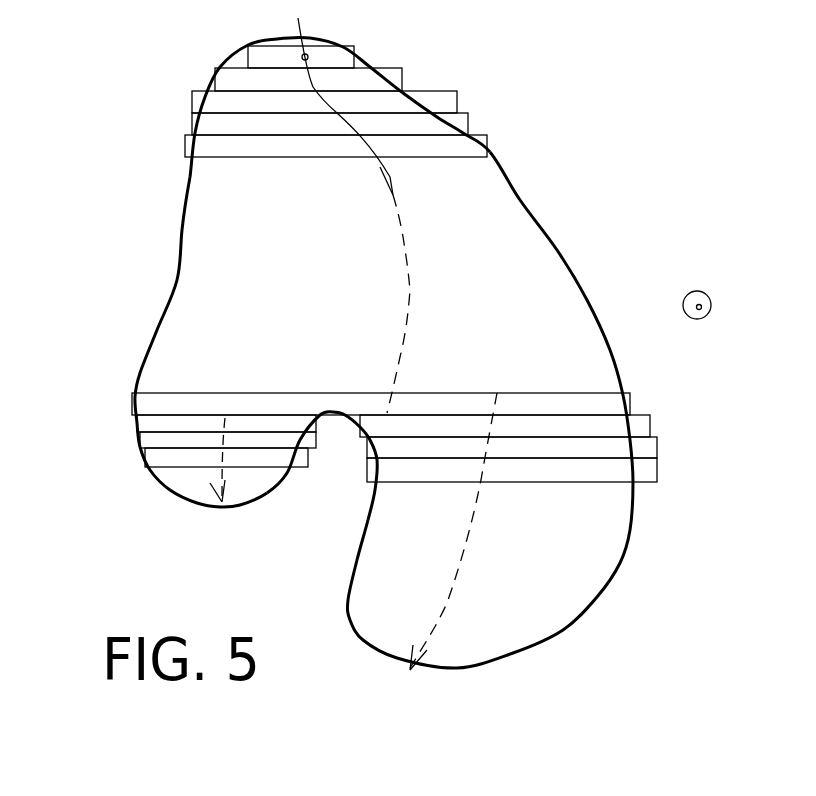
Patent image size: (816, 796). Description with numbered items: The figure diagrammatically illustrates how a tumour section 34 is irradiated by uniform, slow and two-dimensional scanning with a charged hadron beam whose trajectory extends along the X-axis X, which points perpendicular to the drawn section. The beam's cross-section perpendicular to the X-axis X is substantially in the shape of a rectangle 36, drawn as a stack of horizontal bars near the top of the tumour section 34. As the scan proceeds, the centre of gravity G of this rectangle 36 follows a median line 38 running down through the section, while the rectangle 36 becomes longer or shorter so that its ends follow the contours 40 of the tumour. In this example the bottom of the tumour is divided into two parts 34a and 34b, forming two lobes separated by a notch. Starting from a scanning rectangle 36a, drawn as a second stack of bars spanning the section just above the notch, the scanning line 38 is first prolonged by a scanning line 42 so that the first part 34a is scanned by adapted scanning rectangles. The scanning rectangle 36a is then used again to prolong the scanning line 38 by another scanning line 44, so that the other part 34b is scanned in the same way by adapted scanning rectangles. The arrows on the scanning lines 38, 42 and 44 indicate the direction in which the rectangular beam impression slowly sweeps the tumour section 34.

The tumour section 34 is at (180, 272).
The first part of the bottom of the tumour 34a is at (197, 513).
The second part of the bottom of the tumour 34b is at (548, 663).
The rectangle 36 is at (412, 107).
The scanning rectangle 36a is at (147, 403).
The median line 38 is at (410, 295).
The contours of the tumour 40 is at (528, 196).
The scanning line 42 is at (222, 472).
The scanning line 44 is at (462, 558).
The centre of gravity G is at (303, 55).
The X-axis X is at (701, 320).